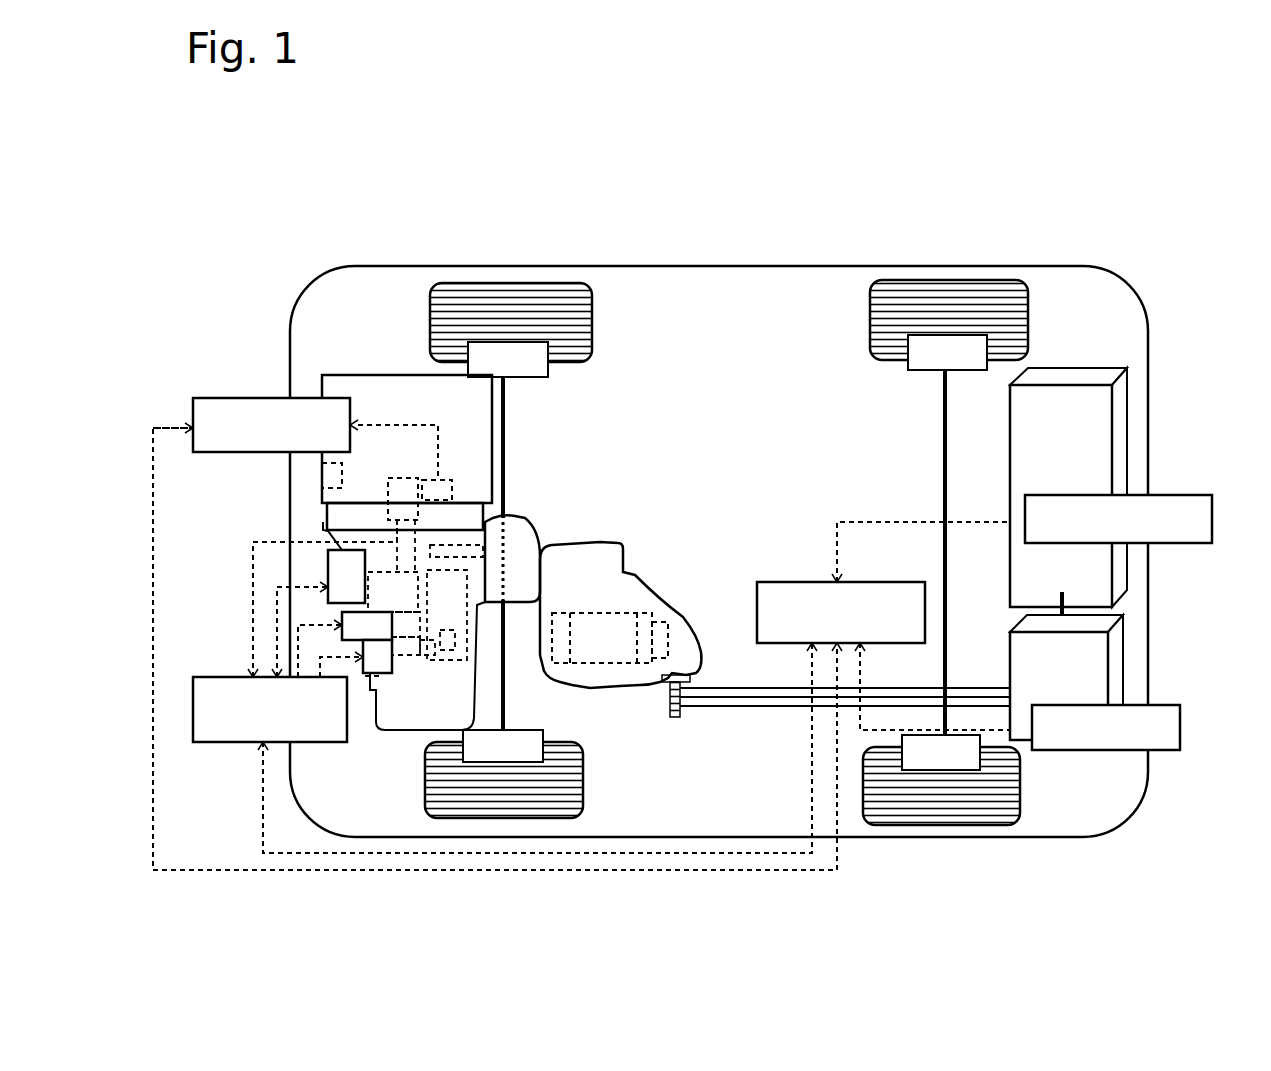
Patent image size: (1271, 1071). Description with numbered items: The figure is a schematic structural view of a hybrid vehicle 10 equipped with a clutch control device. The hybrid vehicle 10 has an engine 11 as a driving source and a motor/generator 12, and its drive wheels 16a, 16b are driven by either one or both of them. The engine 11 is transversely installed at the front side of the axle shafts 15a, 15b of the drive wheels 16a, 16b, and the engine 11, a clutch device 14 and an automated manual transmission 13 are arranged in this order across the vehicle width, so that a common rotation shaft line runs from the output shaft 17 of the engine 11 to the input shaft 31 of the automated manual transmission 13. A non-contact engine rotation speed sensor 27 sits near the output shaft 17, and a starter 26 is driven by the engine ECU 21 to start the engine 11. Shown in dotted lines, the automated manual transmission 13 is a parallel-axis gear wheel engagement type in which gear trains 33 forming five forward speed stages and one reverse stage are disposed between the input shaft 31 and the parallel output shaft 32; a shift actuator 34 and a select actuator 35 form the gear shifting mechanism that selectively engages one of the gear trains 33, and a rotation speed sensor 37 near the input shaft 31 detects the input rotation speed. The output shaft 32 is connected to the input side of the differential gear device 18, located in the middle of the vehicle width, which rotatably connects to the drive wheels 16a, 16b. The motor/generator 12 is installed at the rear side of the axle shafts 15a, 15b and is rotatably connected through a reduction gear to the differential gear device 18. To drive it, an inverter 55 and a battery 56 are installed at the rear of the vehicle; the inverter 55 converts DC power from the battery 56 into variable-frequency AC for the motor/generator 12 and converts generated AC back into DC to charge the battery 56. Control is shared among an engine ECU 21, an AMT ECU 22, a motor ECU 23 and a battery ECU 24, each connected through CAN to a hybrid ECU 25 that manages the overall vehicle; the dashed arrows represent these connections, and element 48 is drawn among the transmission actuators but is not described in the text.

The hybrid vehicle 10 is at (618, 238).
The engine 11 is at (373, 387).
The motor/generator 12 is at (618, 622).
The automated manual transmission 13 is at (402, 660).
The clutch device 14 is at (333, 515).
The axle shaft 15a is at (508, 428).
The axle shaft 15b is at (504, 690).
The drive wheel 16a is at (506, 297).
The drive wheel 16b is at (528, 810).
The output shaft 17 is at (398, 478).
The differential gear device 18 is at (527, 540).
The engine ECU 21 is at (257, 398).
The AMT ECU 22 is at (243, 745).
The motor ECU 23 is at (1096, 750).
The battery ECU 24 is at (1163, 535).
The hybrid ECU 25 is at (760, 590).
The starter 26 is at (322, 472).
The engine rotation speed sensor 27 is at (447, 480).
The input shaft 31 is at (370, 676).
The output shaft 32 is at (447, 650).
The gear trains 33 is at (428, 655).
The shift actuator 34 is at (365, 652).
The select actuator 35 is at (340, 619).
The rotation speed sensor 37 is at (327, 530).
The actuator unit 48 is at (328, 572).
The inverter 55 is at (1115, 645).
The battery 56 is at (1095, 424).